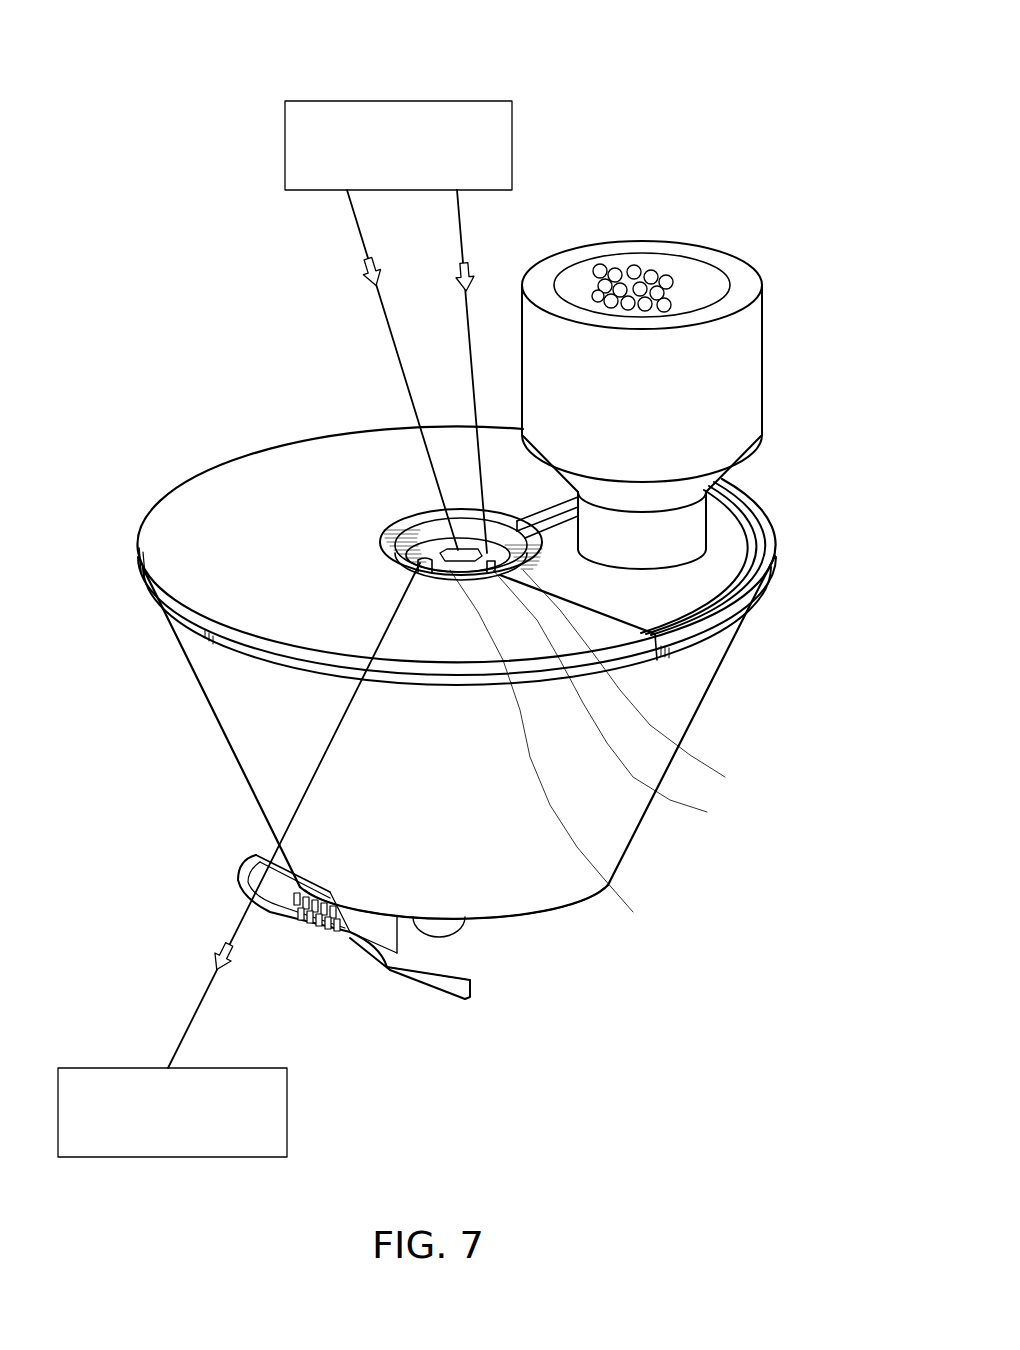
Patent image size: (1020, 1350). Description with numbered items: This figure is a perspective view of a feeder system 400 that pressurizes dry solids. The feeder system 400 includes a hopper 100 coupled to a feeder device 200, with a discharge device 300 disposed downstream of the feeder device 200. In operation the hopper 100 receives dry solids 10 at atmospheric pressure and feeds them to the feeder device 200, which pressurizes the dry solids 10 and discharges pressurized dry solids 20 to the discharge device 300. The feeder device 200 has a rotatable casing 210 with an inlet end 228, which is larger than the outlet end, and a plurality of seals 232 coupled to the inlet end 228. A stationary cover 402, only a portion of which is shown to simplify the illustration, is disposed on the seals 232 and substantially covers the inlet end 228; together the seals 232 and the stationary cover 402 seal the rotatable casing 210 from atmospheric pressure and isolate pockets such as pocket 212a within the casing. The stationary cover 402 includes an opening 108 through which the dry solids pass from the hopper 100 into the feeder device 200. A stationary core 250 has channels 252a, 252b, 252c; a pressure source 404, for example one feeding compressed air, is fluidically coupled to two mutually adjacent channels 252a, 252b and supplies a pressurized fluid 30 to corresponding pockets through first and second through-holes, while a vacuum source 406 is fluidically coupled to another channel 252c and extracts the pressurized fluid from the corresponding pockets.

The feeder system 400 is at (290, 63).
The pressure source 404 is at (421, 176).
The vacuum source 406 is at (194, 1143).
The pressurized fluid 30 is at (452, 292).
The hopper 100 is at (683, 244).
The dry solids 10 is at (618, 266).
The inlet end 228 is at (347, 457).
The stationary cover 402 is at (150, 525).
The stationary core 250 is at (410, 566).
The opening 108 is at (760, 534).
The pocket 212a is at (585, 597).
The plurality of seals 232 is at (690, 615).
The channel 252a is at (654, 680).
The channel 252b is at (631, 697).
The channel 252c is at (556, 755).
The feeder device 200 is at (654, 803).
The rotatable casing 210 is at (220, 700).
The discharge device 300 is at (335, 950).
The pressurized dry solids 20 is at (293, 928).